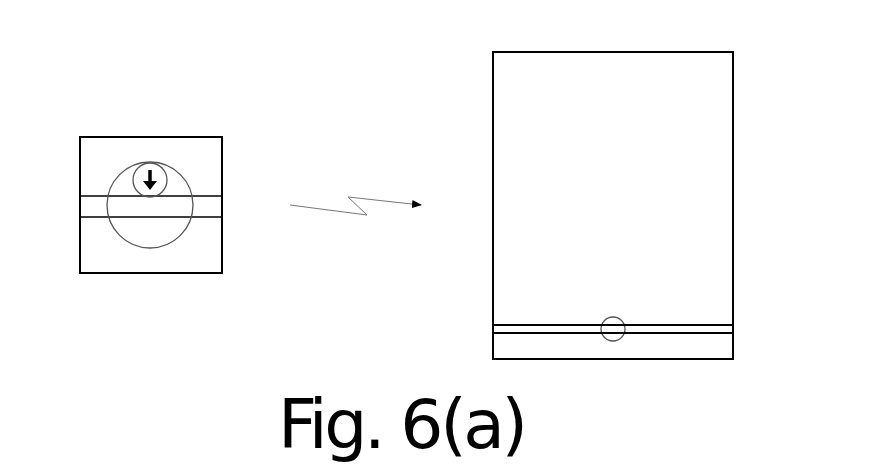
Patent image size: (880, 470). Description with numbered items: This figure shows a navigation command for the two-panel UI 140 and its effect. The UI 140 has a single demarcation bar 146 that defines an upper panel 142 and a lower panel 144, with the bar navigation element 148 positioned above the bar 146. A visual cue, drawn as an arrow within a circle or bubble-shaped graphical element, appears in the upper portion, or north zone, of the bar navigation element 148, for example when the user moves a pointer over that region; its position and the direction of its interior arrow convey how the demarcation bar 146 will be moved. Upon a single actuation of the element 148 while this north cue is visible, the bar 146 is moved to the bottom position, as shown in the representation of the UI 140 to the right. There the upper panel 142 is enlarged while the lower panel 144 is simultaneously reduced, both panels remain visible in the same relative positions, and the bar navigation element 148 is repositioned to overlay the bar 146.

The two-panel UI 140 is at (613, 50).
The upper panel 142 is at (634, 150).
The lower panel 144 is at (670, 347).
The demarcation bar 146 is at (698, 323).
The bar navigation element 148 is at (131, 248).